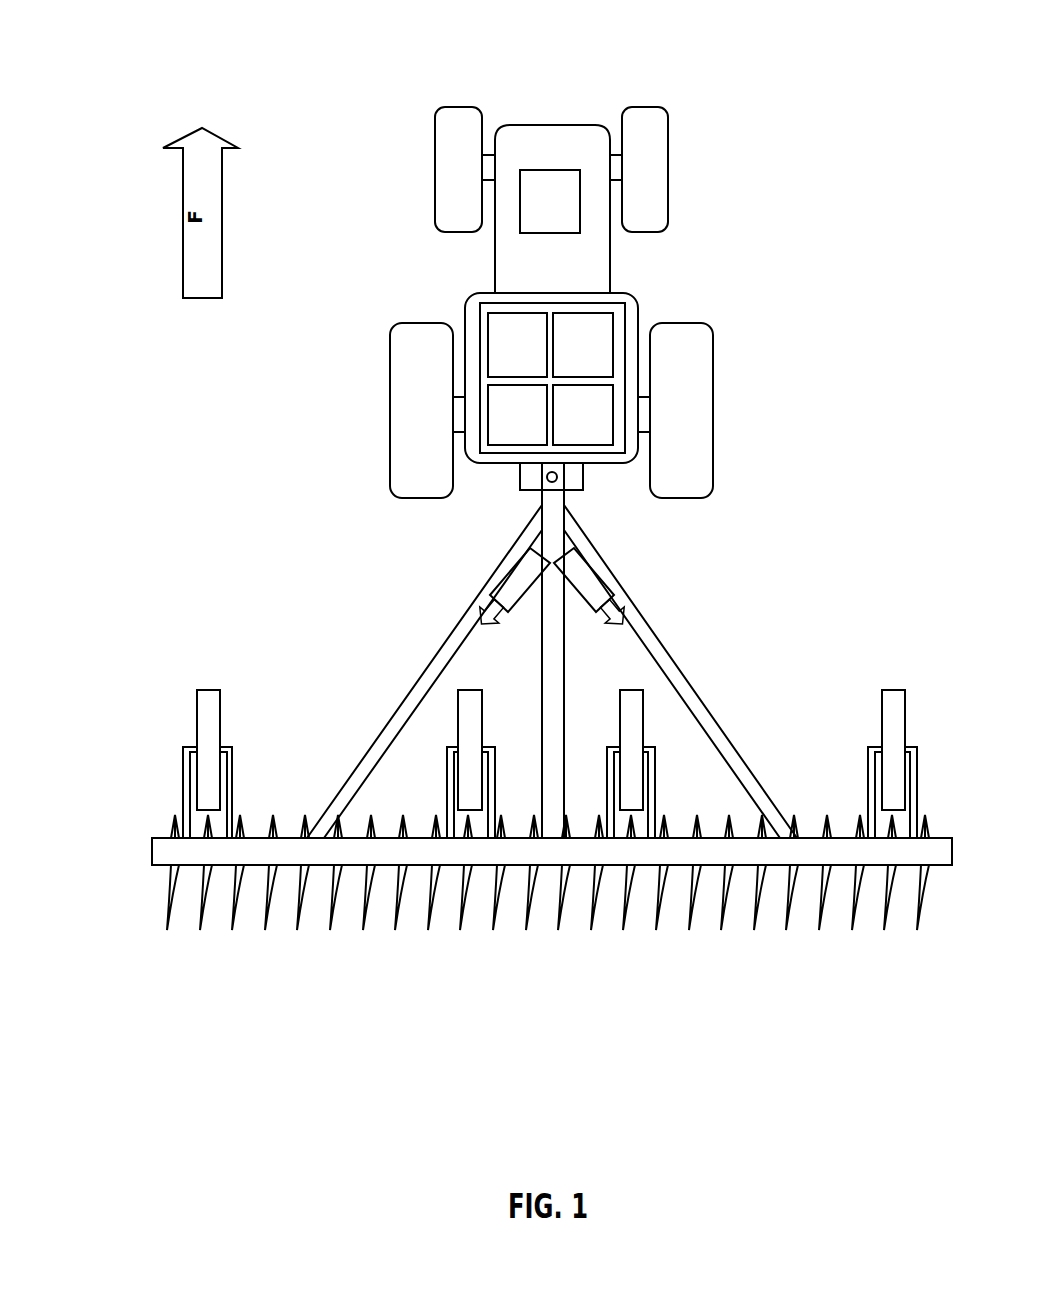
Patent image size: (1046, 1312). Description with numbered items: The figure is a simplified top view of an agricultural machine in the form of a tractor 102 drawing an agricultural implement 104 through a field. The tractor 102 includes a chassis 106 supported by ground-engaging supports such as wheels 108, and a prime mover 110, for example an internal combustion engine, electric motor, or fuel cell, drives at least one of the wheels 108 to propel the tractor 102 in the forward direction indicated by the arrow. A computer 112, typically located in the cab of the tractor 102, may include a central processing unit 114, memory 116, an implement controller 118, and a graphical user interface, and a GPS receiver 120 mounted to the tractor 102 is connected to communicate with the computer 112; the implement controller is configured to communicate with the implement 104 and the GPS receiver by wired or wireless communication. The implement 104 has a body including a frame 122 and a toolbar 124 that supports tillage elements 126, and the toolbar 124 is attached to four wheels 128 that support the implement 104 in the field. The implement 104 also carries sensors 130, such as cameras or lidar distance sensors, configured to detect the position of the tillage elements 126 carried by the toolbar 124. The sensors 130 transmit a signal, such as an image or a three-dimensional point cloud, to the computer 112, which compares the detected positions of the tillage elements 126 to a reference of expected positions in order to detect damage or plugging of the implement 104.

The tractor 102 is at (367, 59).
The agricultural implement 104 is at (320, 566).
The chassis 106 is at (598, 128).
The wheels 108 is at (435, 157).
The prime mover 110 is at (540, 170).
The computer 112 is at (634, 332).
The central processing unit 114 is at (534, 428).
The memory 116 is at (599, 360).
The implement controller 118 is at (534, 360).
The GPS receiver 120 is at (599, 428).
The frame 122 is at (417, 682).
The toolbar 124 is at (152, 848).
The tillage elements 126 is at (168, 902).
The wheels 128 is at (197, 713).
The sensors 130 is at (607, 592).